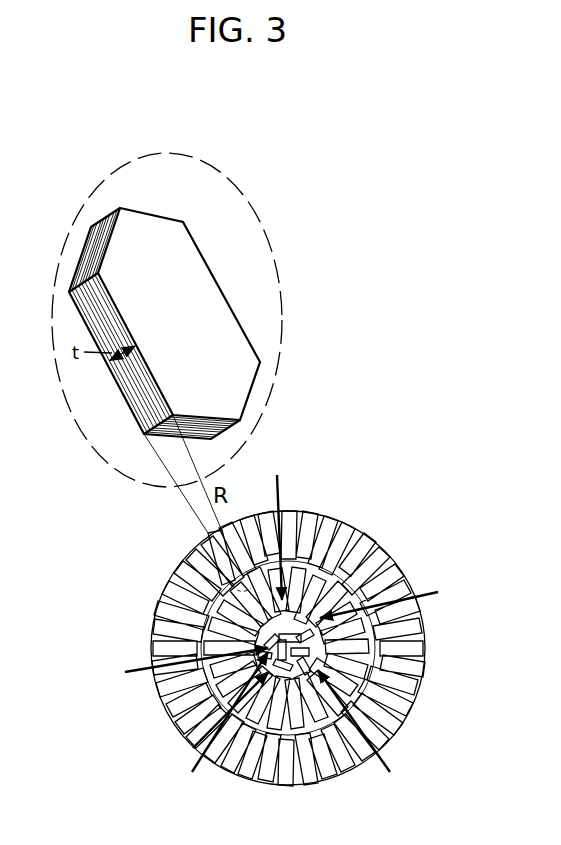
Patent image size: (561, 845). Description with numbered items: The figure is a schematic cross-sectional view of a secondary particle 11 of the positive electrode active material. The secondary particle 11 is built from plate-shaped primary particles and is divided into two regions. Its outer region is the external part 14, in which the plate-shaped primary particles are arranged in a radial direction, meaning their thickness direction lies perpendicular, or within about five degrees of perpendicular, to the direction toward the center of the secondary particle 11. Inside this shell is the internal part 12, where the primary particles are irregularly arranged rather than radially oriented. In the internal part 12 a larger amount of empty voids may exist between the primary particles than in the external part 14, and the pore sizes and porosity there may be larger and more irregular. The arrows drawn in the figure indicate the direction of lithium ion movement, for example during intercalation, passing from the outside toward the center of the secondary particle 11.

The secondary particle 11 is at (297, 627).
The internal part 12 is at (372, 639).
The external part 14 is at (401, 571).